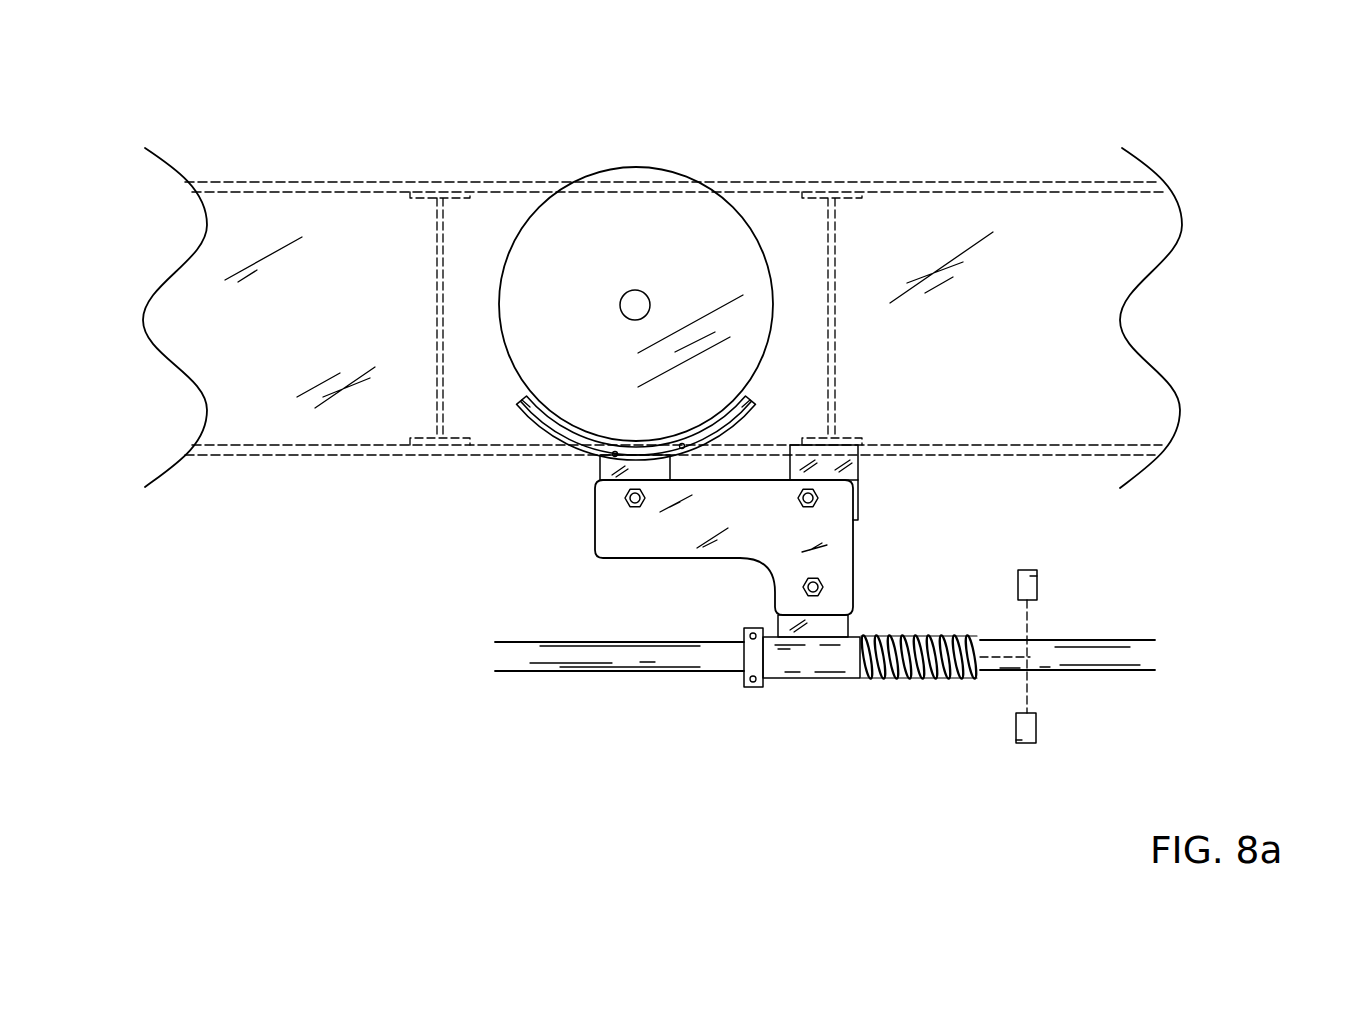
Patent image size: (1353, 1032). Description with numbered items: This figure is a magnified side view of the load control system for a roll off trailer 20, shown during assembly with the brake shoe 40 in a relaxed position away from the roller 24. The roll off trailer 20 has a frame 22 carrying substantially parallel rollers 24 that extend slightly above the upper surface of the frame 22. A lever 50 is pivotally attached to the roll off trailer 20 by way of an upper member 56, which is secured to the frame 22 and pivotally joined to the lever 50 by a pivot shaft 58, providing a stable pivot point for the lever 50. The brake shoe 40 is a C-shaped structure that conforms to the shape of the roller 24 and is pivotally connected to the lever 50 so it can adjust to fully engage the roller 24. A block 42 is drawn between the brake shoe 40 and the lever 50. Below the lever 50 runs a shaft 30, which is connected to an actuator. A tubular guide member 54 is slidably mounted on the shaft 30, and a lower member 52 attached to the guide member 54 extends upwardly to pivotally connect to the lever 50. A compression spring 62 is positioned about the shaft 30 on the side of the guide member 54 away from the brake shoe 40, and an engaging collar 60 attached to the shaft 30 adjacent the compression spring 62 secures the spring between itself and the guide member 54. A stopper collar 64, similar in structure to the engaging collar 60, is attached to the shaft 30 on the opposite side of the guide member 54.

The roll off trailer 20 is at (278, 182).
The frame 22 is at (502, 182).
The roller 24 is at (747, 218).
The shaft 30 is at (587, 655).
The brake shoe 40 is at (752, 405).
The left spacer block 42 is at (617, 465).
The lever 50 is at (763, 552).
The lower member 52 is at (833, 627).
The guide member 54 is at (807, 660).
The upper member 56 is at (858, 478).
The pivot shaft 58 is at (813, 507).
The engaging collar 60 is at (1037, 588).
The compression spring 62 is at (908, 677).
The stopper collar 64 is at (752, 663).